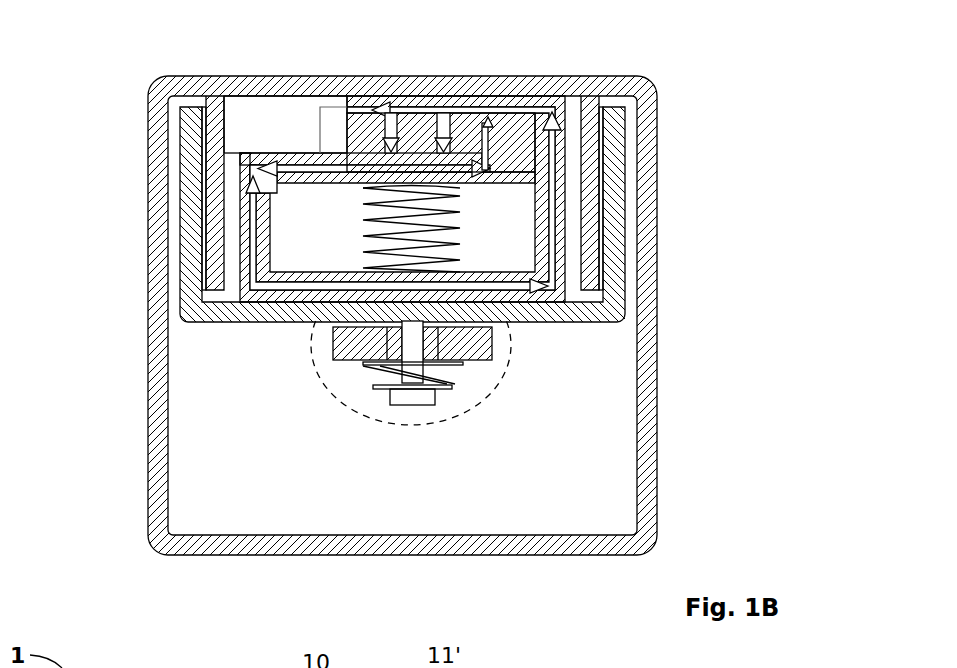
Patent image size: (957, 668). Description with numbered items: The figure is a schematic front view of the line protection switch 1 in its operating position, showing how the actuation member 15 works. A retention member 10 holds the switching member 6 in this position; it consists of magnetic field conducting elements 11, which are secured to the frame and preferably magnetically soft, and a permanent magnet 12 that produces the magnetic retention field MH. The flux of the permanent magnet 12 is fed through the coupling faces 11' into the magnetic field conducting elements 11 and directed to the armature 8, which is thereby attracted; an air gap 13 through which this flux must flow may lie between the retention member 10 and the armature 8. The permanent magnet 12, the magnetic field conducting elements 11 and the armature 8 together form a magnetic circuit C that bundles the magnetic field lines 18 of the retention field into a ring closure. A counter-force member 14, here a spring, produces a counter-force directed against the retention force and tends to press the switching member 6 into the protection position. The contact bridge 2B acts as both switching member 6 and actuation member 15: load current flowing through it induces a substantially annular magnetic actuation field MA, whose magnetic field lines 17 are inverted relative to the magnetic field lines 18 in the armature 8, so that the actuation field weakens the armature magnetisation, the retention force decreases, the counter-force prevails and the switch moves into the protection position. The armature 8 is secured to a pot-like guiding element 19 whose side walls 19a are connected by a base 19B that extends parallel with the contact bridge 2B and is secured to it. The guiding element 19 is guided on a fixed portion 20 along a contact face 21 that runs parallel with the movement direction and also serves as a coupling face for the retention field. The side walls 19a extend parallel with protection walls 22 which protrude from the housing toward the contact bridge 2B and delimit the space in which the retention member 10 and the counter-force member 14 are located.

The line protection switch 1 is at (116, 36).
The fixed portion 20 is at (210, 92).
The magnetic circuit C is at (279, 141).
The coupling faces 11' is at (371, 87).
The retention member 10 is at (374, 95).
The permanent magnet 12 is at (490, 118).
The magnetic field lines of the magnetic retention field 18 is at (557, 78).
The magnetic retention field MH is at (558, 157).
The protection walls 22 is at (215, 262).
The magnetic field conducting elements 11 is at (409, 199).
The contact face 21 is at (205, 230).
The side walls 19a is at (187, 199).
The armature 8 is at (552, 293).
The air gap 13 is at (585, 296).
The base 19B is at (545, 312).
The contact bridge 2B is at (494, 345).
The counter-force member 14 is at (367, 210).
The guiding element 19 is at (176, 308).
The switching member 6 is at (351, 345).
The magnetic actuation field MA is at (345, 408).
The magnetic field lines of the magnetic actuation field 17 is at (398, 423).
The actuation member 15 is at (483, 372).